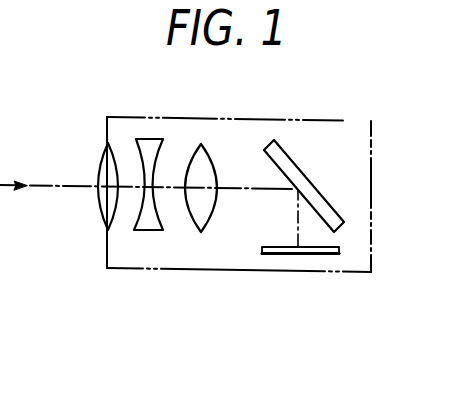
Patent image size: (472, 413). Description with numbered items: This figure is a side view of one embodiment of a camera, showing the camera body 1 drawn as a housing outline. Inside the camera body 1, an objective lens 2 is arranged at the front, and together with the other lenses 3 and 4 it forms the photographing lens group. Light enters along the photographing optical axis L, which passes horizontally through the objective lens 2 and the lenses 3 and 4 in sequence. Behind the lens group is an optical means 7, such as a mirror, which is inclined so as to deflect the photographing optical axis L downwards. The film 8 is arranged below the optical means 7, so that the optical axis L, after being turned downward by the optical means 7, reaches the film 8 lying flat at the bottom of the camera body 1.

The camera body 1 is at (376, 163).
The photographing optical axis L is at (22, 180).
The objective lens 2 is at (102, 157).
The lens 3 is at (152, 140).
The lens 4 is at (206, 150).
The optical means 7 is at (281, 147).
The film 8 is at (328, 256).